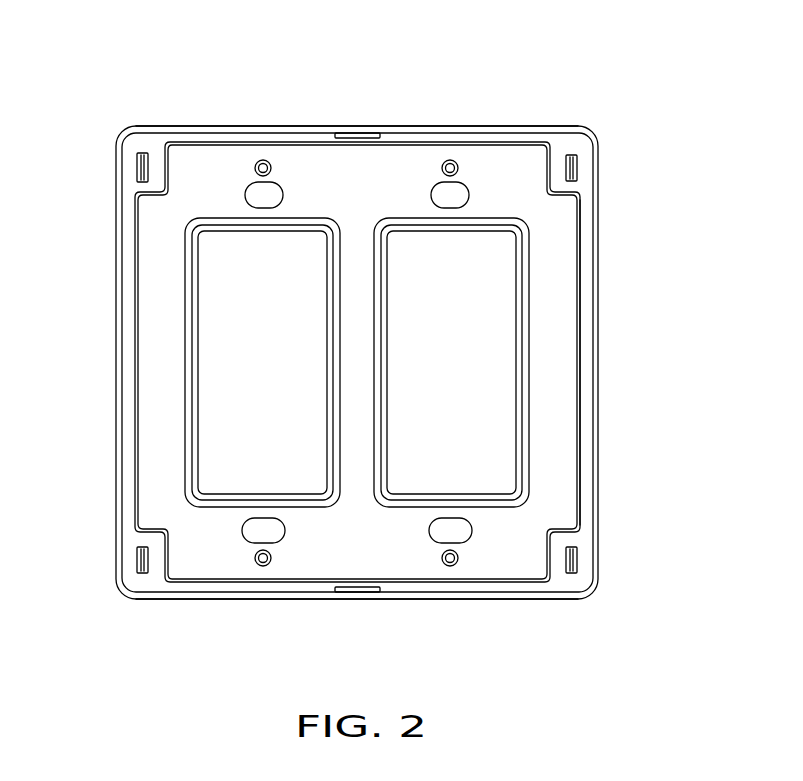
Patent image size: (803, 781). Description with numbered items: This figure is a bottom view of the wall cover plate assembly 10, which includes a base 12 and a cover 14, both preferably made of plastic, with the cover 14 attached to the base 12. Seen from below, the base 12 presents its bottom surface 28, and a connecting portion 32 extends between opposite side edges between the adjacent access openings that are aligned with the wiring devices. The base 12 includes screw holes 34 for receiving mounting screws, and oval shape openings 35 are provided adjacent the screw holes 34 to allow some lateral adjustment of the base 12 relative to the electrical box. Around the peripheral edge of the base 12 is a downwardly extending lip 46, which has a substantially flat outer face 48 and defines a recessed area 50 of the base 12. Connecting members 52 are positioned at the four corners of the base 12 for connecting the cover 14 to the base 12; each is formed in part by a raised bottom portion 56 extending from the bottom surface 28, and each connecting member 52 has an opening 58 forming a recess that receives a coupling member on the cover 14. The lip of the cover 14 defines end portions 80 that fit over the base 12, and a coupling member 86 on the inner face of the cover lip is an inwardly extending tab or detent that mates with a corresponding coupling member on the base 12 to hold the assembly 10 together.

The wall cover plate assembly 10 is at (655, 162).
The base 12 is at (596, 287).
The cover 14 is at (556, 127).
The bottom surface 28 is at (556, 265).
The connecting portion 32 is at (360, 350).
The screw holes 34 is at (262, 159).
The oval shape openings 35 is at (276, 190).
The lip 46 is at (309, 600).
The outer face 48 is at (586, 366).
The recessed area 50 is at (371, 187).
The connecting members 52 is at (137, 167).
The raised bottom portion 56 is at (158, 186).
The opening 58 is at (138, 153).
The end portions 80 is at (600, 412).
The coupling member 86 is at (360, 140).